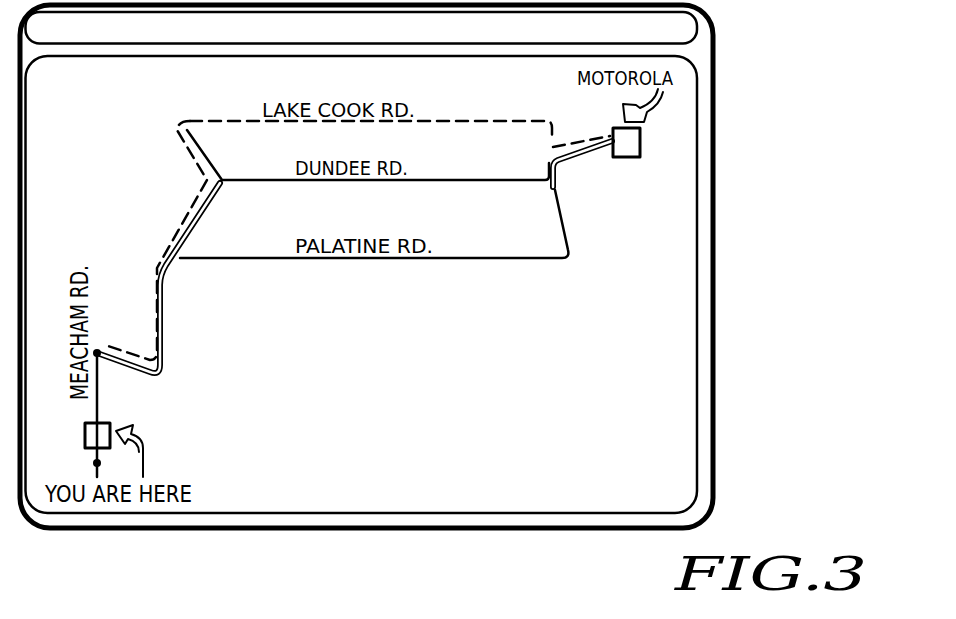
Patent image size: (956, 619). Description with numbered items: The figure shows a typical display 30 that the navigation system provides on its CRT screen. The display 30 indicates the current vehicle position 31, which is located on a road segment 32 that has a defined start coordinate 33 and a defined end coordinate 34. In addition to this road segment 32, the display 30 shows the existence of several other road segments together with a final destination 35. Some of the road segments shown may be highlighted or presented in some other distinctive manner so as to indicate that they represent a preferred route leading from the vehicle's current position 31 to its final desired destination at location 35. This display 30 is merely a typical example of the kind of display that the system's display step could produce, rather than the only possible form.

The display 30 is at (676, 355).
The current vehicle position 31 is at (86, 434).
The road segment 32 is at (99, 405).
The start coordinate 33 is at (93, 464).
The end coordinate 34 is at (103, 350).
The final destination 35 is at (642, 141).